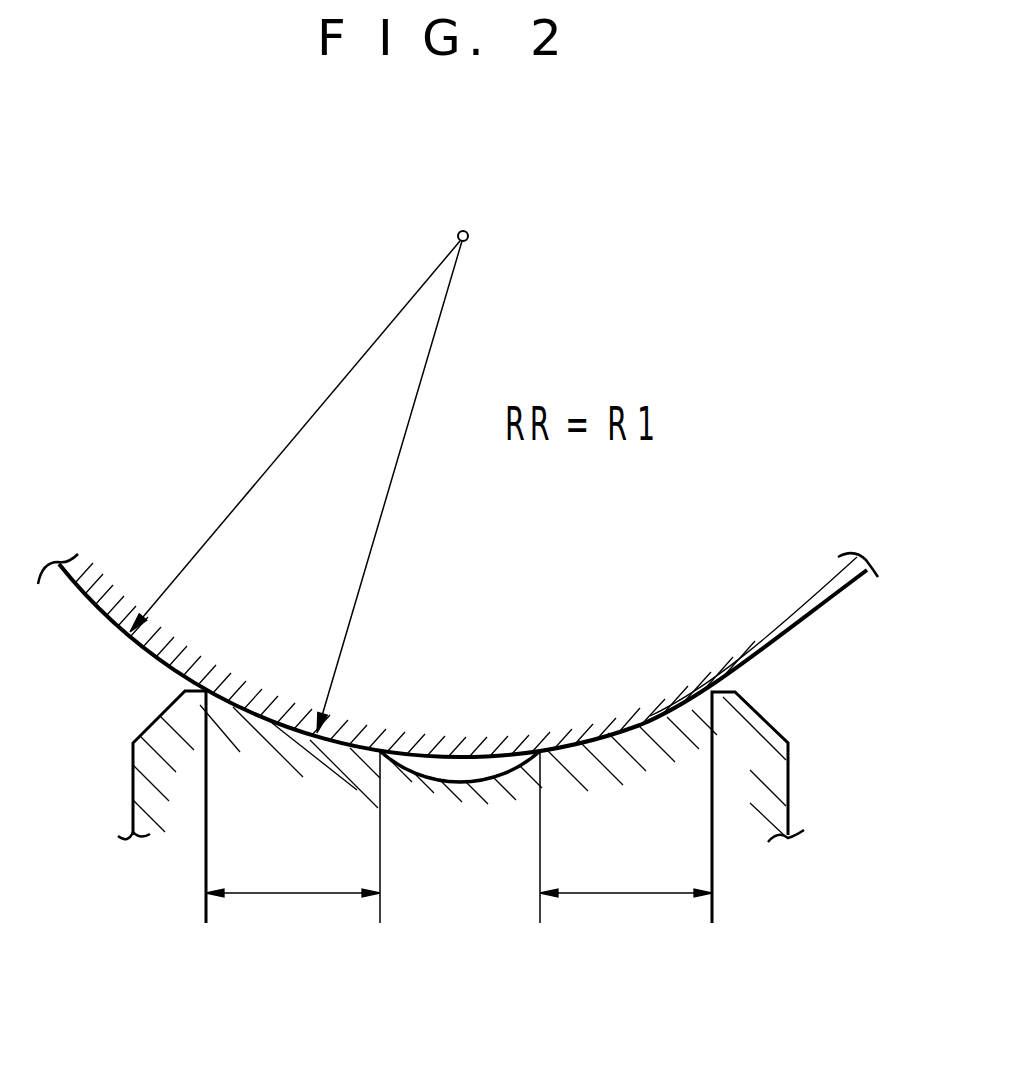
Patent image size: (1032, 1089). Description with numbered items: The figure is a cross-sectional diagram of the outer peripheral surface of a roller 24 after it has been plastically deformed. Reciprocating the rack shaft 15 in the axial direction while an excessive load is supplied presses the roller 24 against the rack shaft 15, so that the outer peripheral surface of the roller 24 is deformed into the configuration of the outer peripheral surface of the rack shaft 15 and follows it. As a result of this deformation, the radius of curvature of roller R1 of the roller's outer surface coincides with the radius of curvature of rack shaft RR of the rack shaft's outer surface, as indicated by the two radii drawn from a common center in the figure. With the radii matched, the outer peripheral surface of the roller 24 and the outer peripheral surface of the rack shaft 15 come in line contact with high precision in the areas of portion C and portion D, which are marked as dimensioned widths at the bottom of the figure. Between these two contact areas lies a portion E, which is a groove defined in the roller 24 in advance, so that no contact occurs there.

The rack shaft 15 is at (737, 582).
The roller 24 is at (737, 777).
The portion C is at (293, 912).
The portion D is at (626, 912).
The groove E is at (459, 778).
The radius of curvature of rack shaft RR is at (268, 436).
The radius of curvature of roller R1 is at (351, 487).